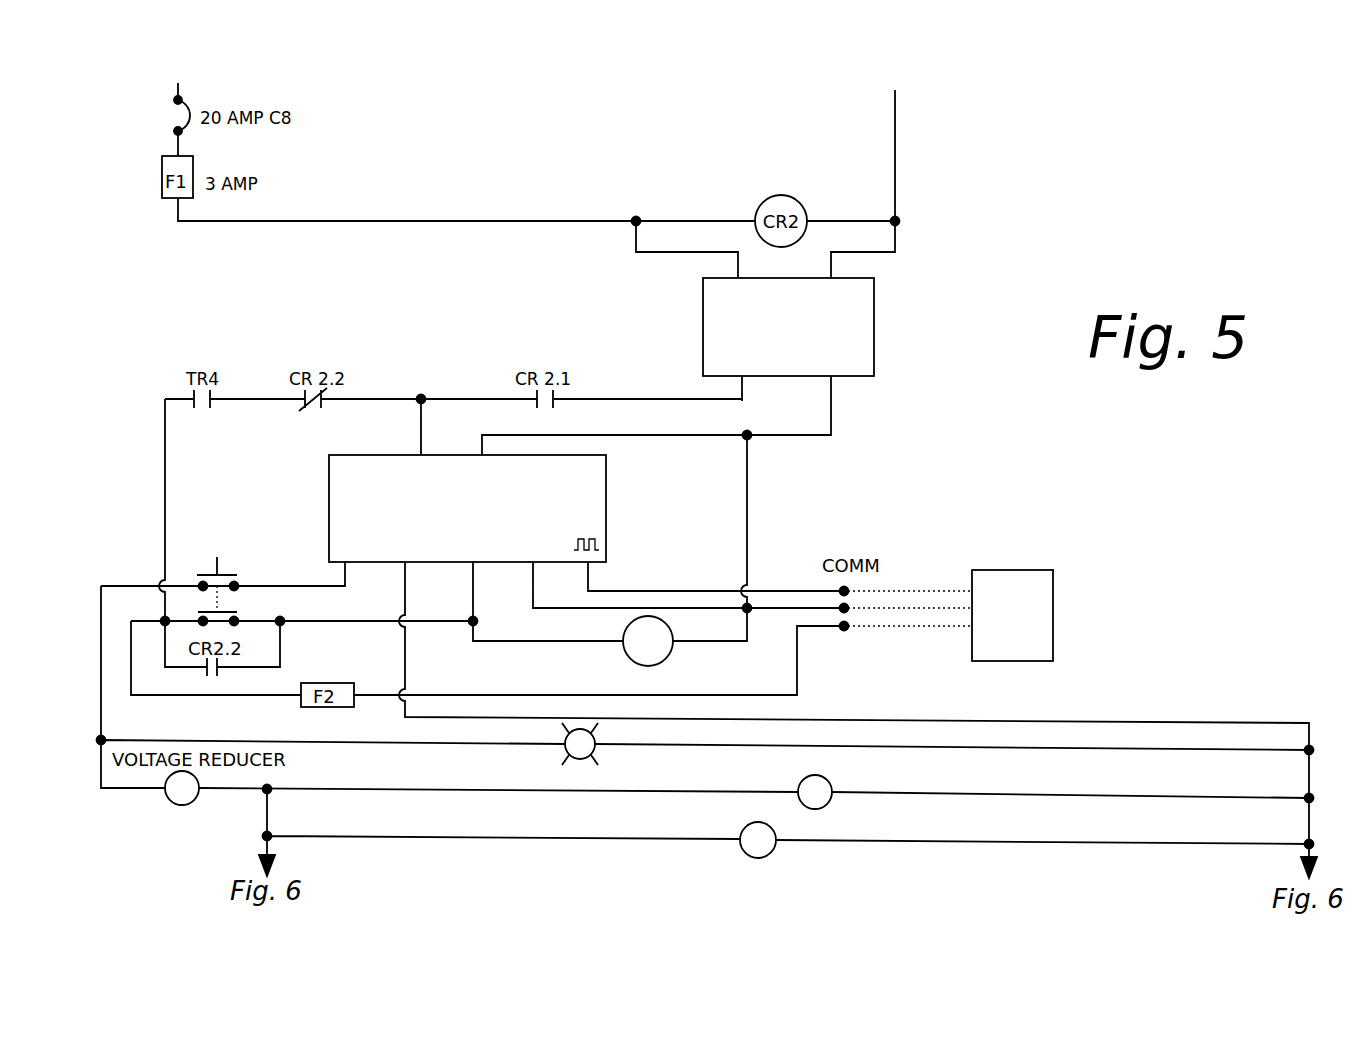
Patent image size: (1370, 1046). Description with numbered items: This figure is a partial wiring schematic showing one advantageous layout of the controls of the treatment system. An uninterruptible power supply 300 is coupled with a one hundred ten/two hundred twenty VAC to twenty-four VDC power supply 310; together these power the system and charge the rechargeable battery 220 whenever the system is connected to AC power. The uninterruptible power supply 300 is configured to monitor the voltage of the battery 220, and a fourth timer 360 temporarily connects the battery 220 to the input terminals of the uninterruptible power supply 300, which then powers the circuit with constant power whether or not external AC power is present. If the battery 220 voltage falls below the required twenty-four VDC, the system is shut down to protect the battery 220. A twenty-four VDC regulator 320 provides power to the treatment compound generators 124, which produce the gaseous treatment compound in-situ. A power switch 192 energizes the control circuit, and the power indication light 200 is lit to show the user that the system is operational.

The 110/220 VAC to 24 VDC power supply 310 is at (847, 325).
The uninterruptible power supply 300 is at (583, 489).
The power switch 192 is at (232, 565).
The fourth timer 360 is at (668, 657).
The rechargeable battery 220 is at (1032, 628).
The power indication light 200 is at (596, 751).
The 24 VDC regulator 320 is at (192, 796).
The treatment compound generators 124 is at (818, 789).